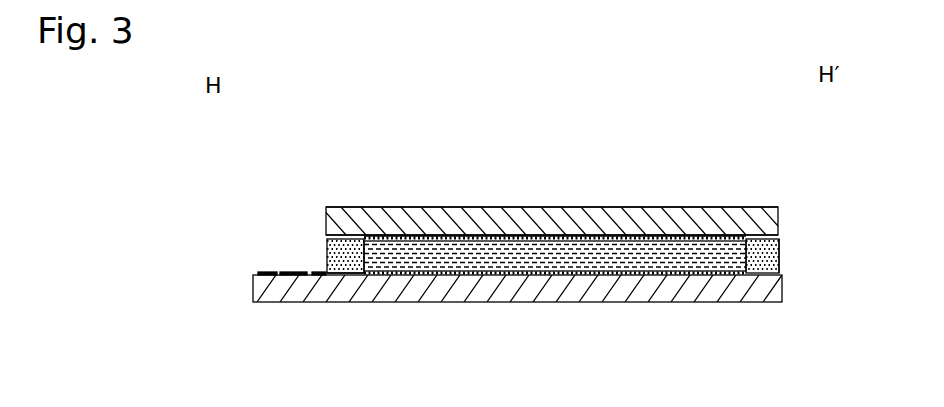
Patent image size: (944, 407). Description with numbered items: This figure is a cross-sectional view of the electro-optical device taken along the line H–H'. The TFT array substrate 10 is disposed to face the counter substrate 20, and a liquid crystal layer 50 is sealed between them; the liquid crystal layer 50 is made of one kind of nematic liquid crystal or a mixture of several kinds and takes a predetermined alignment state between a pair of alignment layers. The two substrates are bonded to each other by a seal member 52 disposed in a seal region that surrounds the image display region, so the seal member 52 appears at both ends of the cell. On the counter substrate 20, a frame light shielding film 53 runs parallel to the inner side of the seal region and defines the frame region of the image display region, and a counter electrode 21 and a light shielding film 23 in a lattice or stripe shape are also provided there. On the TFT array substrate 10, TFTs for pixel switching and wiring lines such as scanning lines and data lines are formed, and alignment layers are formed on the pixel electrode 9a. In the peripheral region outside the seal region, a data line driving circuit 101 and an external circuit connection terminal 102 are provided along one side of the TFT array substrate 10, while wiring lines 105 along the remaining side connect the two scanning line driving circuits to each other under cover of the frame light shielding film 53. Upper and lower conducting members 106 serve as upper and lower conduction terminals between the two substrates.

The pixel electrode 9a is at (425, 273).
The TFT array substrate 10 is at (590, 283).
The counter substrate 20 is at (497, 210).
The counter electrode 21 is at (623, 211).
The light shielding film 23 is at (569, 236).
The liquid crystal layer 50 is at (485, 253).
The seal member 52 is at (325, 239).
The frame light shielding film 53 is at (370, 240).
The data line driving circuit 101 is at (288, 272).
The external circuit connection terminal 102 is at (258, 272).
The wiring lines 105 is at (778, 250).
The upper and lower conducting members 106 is at (327, 273).